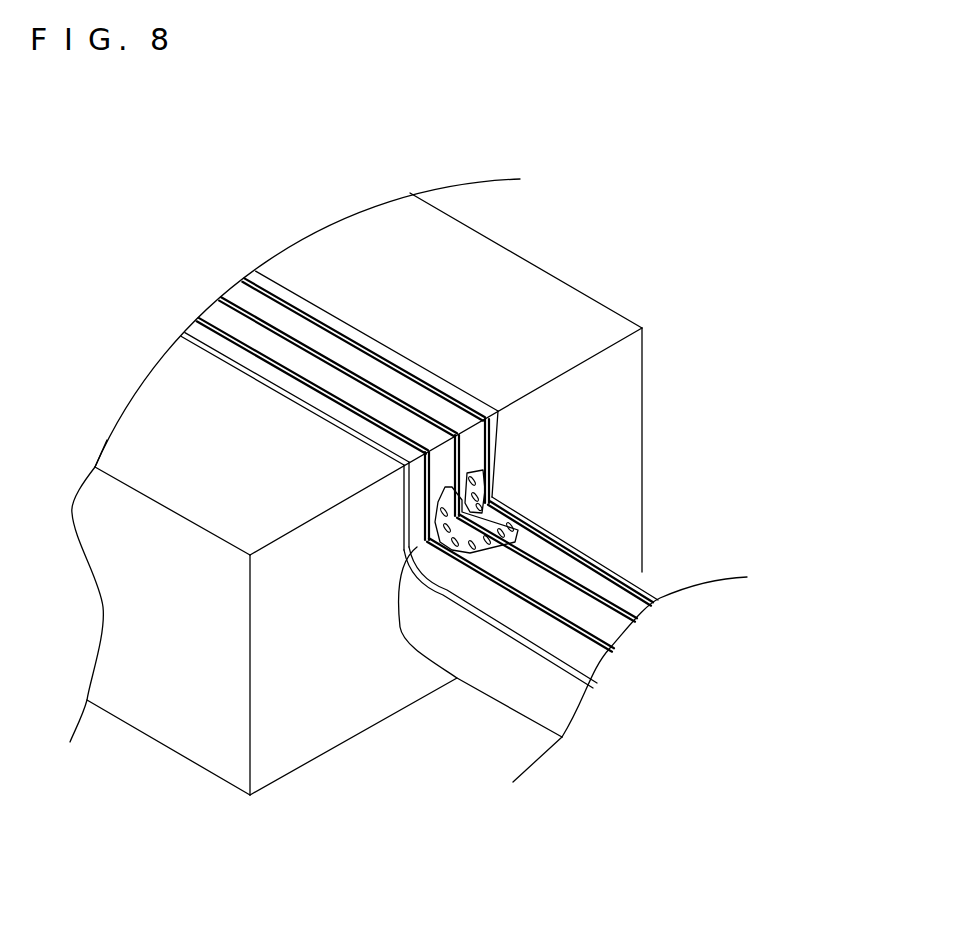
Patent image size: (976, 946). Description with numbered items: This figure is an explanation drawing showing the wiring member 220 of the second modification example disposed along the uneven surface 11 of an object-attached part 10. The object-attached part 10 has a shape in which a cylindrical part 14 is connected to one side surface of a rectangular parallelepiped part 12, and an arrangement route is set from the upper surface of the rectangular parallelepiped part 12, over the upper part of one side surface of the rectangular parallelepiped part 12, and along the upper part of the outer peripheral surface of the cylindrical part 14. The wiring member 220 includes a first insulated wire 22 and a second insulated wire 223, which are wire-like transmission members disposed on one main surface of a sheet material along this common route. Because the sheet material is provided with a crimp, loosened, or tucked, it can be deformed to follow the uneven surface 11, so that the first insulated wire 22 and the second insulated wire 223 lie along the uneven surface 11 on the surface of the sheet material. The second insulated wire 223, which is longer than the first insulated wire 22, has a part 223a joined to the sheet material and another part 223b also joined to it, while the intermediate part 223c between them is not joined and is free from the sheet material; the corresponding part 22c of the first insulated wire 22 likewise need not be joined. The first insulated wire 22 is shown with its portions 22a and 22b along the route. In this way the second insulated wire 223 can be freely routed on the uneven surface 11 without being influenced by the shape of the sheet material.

The object-attached part 10 is at (540, 247).
The uneven surface 11 is at (573, 313).
The rectangular parallelepiped part 12 is at (155, 741).
The cylindrical part 14 is at (532, 722).
The first insulated wire 22 is at (443, 479).
The first cable portion on top surface 22a is at (392, 350).
The second cable portion on step surface 22b is at (548, 566).
The part of the first insulated wire 22c is at (482, 438).
The wiring member 220 is at (451, 365).
The second insulated wire 223 is at (453, 472).
The part of the second insulated wire 223a is at (345, 337).
The other part of the second insulated wire 223b is at (594, 566).
The intermediate part 223c is at (412, 508).